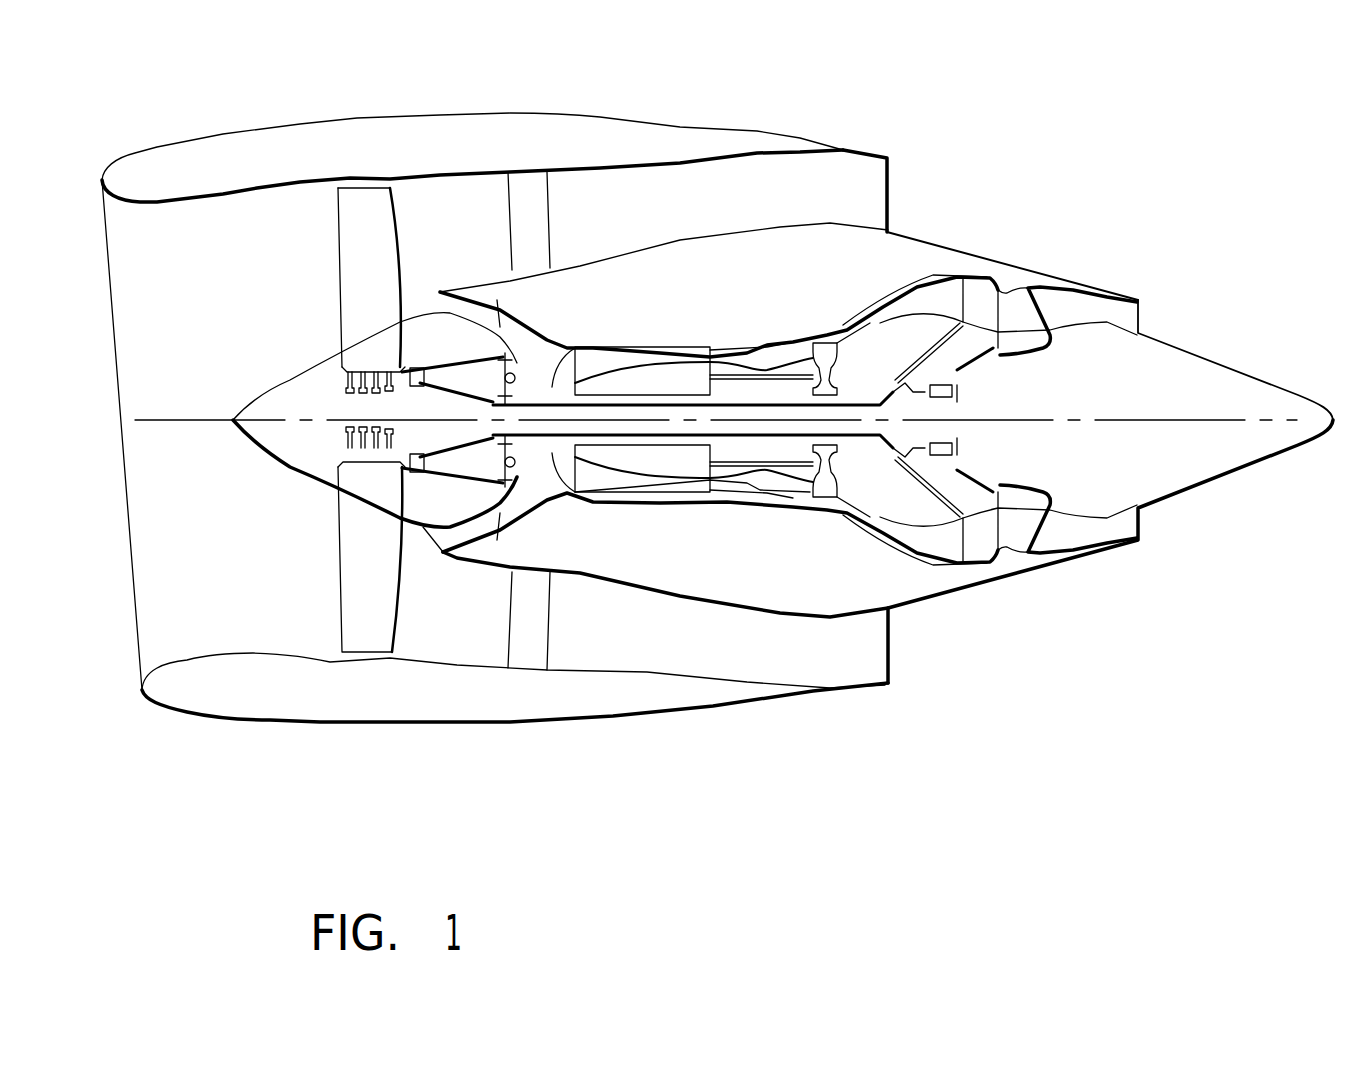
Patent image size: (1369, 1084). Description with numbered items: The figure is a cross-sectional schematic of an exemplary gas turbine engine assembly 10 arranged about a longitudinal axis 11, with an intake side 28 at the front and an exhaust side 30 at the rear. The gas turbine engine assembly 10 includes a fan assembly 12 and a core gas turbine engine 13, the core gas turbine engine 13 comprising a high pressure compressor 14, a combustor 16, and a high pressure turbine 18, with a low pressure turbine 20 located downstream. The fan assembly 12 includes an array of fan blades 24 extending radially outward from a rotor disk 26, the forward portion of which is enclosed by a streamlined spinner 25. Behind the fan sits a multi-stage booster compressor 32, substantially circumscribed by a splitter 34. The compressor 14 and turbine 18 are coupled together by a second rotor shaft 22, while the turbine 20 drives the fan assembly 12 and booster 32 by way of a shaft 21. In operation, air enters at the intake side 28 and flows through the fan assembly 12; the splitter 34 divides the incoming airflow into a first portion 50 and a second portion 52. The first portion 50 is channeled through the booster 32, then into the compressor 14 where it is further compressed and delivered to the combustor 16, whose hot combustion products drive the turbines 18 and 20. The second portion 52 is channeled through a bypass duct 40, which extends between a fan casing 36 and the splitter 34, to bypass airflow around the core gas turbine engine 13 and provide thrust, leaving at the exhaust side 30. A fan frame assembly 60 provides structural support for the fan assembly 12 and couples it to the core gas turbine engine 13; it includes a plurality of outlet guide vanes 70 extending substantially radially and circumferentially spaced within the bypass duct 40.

The gas turbine engine assembly 10 is at (800, 95).
The longitudinal axis 11 is at (228, 425).
The fan assembly 12 is at (348, 567).
The core gas turbine engine 13 is at (708, 622).
The high pressure compressor 14 is at (597, 360).
The combustor 16 is at (780, 355).
The high pressure turbine 18 is at (822, 505).
The low pressure turbine 20 is at (922, 297).
The shaft 21 is at (552, 455).
The second rotor shaft 22 is at (790, 384).
The fan blades 24 is at (347, 264).
The spinner 25 is at (298, 480).
The rotor disk 26 is at (343, 380).
The intake side 28 is at (210, 622).
The exhaust side 30 is at (870, 645).
The booster compressor 32 is at (495, 303).
The splitter 34 is at (440, 552).
The fan casing 36 is at (283, 187).
The bypass duct 40 is at (797, 205).
The first portion of the airflow 50 is at (476, 308).
The second portion of the airflow 52 is at (686, 213).
The fan frame assembly 60 is at (478, 205).
The outlet guide vanes 70 is at (538, 625).